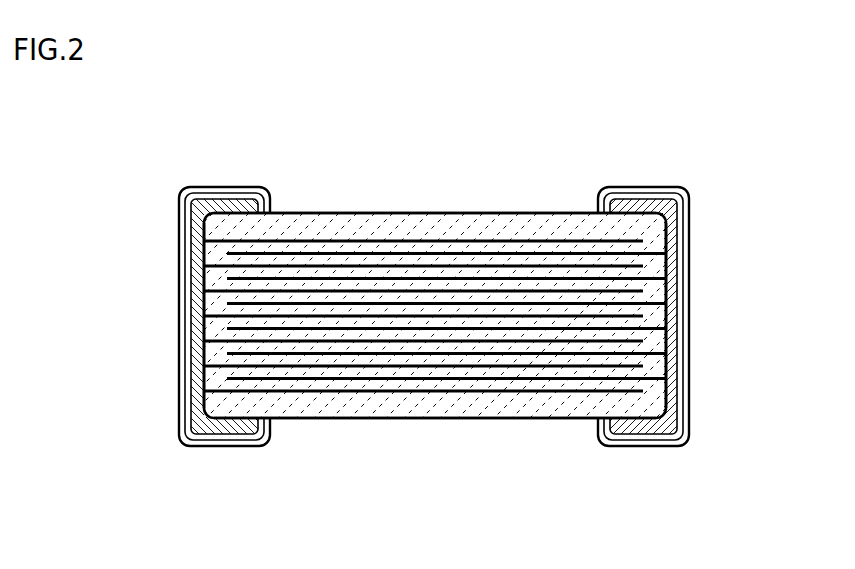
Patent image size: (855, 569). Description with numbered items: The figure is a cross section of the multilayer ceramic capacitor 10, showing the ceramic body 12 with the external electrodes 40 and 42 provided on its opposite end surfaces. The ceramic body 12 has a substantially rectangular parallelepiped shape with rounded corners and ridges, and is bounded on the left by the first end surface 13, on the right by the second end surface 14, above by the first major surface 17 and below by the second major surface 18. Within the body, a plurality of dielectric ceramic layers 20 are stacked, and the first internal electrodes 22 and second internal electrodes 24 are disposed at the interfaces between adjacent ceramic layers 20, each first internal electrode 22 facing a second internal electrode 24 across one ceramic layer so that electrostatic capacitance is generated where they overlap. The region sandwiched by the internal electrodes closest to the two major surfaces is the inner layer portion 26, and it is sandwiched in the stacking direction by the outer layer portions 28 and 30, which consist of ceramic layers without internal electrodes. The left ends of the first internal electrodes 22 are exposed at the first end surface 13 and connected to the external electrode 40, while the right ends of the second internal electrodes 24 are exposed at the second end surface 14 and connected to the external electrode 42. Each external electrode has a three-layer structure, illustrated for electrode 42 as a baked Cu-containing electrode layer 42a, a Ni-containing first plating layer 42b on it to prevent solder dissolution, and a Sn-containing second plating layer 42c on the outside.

The multilayer ceramic capacitor 10 is at (203, 168).
The ceramic body 12 is at (518, 211).
The first end surface 13 is at (180, 312).
The second end surface 14 is at (690, 403).
The first major surface 17 is at (455, 212).
The second major surface 18 is at (427, 419).
The ceramic layer 20 is at (524, 330).
The first internal electrode 22 is at (322, 290).
The second internal electrode 24 is at (368, 334).
The inner layer portion 26 is at (712, 241).
The outer layer portion 28 is at (666, 213).
The outer layer portion 30 is at (666, 391).
The external electrode 40 is at (108, 343).
The external electrode 42 is at (742, 503).
The electrode layer 42a is at (643, 316).
The first plating layer 42b is at (643, 316).
The second plating layer 42c is at (643, 316).